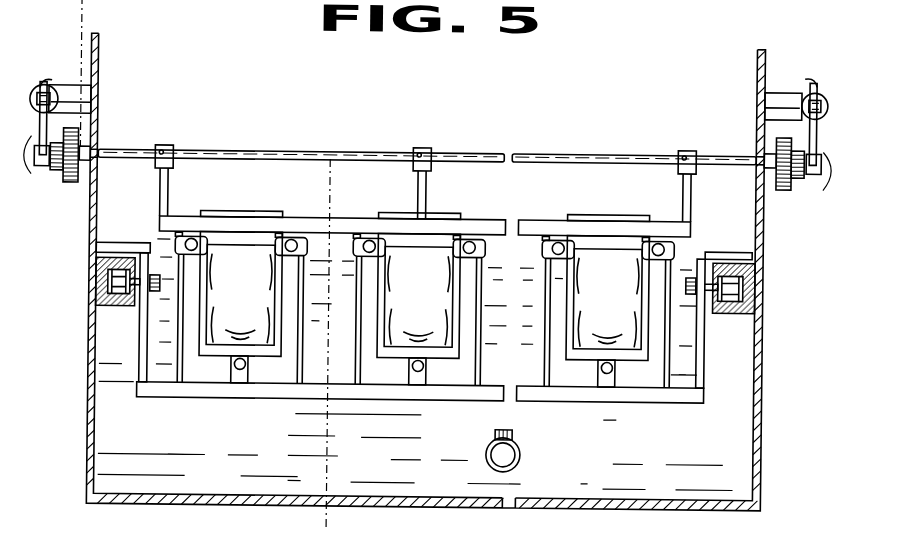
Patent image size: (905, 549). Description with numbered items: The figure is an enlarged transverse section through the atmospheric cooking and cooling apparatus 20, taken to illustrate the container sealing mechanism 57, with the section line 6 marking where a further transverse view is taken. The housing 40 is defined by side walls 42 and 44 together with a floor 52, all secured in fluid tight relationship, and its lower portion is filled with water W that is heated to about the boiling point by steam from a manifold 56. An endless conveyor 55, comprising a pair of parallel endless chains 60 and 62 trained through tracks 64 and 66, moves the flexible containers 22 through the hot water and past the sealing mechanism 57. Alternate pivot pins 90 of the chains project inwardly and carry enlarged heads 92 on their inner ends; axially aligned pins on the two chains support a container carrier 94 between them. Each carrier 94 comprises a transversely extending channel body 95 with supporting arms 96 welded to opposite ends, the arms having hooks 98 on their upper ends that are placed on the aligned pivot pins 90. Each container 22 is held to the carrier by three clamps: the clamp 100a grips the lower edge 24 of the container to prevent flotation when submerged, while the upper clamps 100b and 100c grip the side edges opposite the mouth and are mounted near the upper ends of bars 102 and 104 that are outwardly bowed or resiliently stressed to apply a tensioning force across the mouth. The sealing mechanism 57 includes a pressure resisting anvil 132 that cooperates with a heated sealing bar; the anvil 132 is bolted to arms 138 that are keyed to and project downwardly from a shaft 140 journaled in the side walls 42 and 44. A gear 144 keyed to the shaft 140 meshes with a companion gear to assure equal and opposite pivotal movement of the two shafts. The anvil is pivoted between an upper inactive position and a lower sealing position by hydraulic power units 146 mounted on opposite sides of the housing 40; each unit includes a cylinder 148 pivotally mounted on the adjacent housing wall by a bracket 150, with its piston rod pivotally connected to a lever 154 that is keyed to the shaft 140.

The section line 6– 6 is at (138, 17).
The atmospheric cooking and cooling apparatus 20 is at (282, 70).
The flexible container 22 is at (252, 314).
The lower edge of the flexible container 24 is at (387, 362).
The housing 40 is at (82, 487).
The side wall 42 is at (89, 379).
The side wall 44 is at (762, 387).
The floor 52 is at (172, 507).
The endless conveyor 55 is at (96, 286).
The steam manifold 56 is at (524, 452).
The sealing mechanism 57 is at (566, 120).
The endless chain 60 is at (113, 294).
The endless chain 62 is at (743, 290).
The track 64 is at (100, 309).
The track 66 is at (745, 268).
The pivot pin 90 is at (142, 298).
The enlarged head 92 is at (154, 273).
The container carrier 94 is at (178, 406).
The channel body 95 is at (527, 398).
The supporting arm 96 is at (138, 381).
The hook 98 is at (130, 250).
The clamp 100a is at (240, 372).
The clamp 100b is at (186, 242).
The clamp 100c is at (294, 240).
The bar 102 is at (184, 264).
The bar 104 is at (298, 280).
The anvil 132 is at (520, 226).
The arm 138 is at (158, 186).
The shaft 140 is at (228, 153).
The gear 144 is at (68, 172).
The hydraulic power unit 146 is at (45, 88).
The cylinder 148 is at (55, 109).
The bracket 150 is at (80, 97).
The lever 154 is at (66, 184).
The water W is at (733, 253).